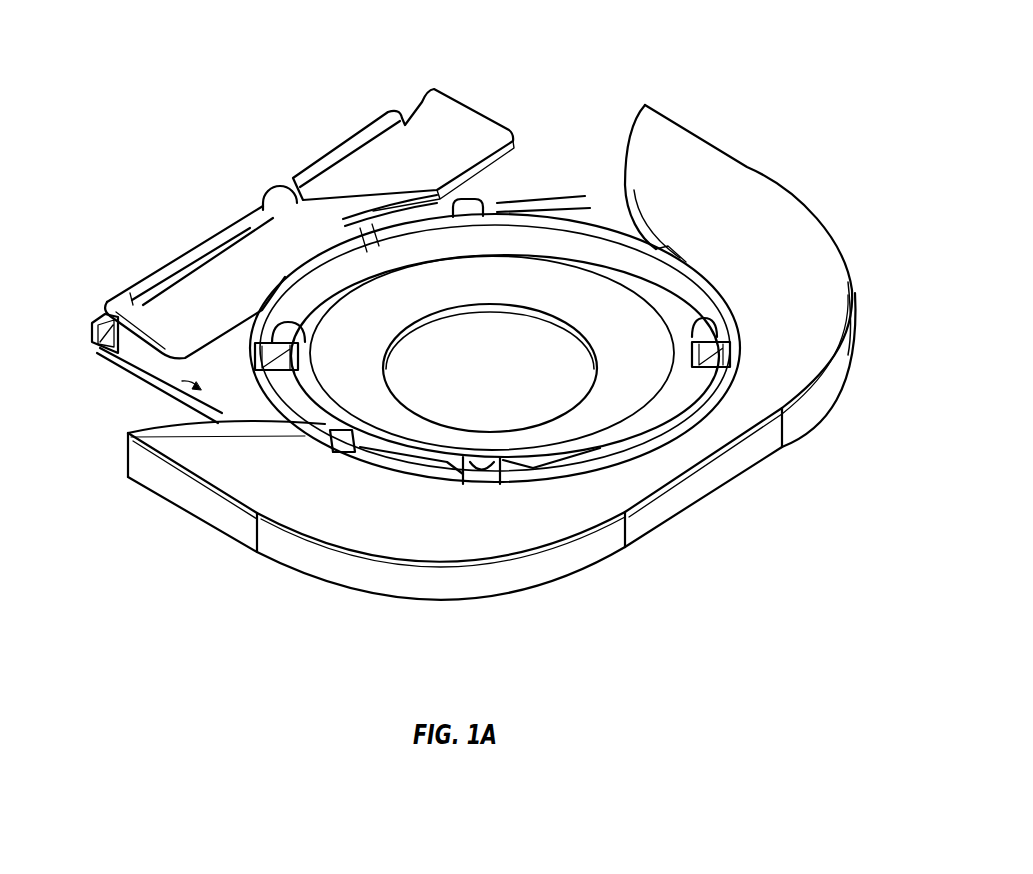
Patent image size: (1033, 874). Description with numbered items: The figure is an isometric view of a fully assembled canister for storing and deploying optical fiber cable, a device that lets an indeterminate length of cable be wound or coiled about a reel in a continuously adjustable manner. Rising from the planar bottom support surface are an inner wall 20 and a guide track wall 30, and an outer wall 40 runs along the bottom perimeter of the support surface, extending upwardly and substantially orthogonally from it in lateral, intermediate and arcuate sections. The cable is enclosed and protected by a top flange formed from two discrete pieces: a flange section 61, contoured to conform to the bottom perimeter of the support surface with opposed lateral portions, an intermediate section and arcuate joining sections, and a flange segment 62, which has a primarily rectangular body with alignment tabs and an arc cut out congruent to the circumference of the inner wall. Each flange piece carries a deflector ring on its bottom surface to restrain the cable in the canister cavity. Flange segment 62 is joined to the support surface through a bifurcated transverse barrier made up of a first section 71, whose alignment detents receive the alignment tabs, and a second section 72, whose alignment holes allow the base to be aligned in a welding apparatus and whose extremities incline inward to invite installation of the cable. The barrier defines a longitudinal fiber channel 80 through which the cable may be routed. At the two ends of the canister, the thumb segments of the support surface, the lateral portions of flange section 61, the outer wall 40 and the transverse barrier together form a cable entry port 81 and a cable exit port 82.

The inner wall 20 is at (287, 400).
The guide track wall 30 is at (583, 262).
The outer wall 40 is at (440, 588).
The flange section 61 is at (736, 178).
The flange segment 62 is at (470, 121).
The first section 71 is at (183, 250).
The second section 72 is at (122, 357).
The fiber channel 80 is at (93, 348).
The cable entry port 81 is at (171, 389).
The cable exit port 82 is at (603, 133).